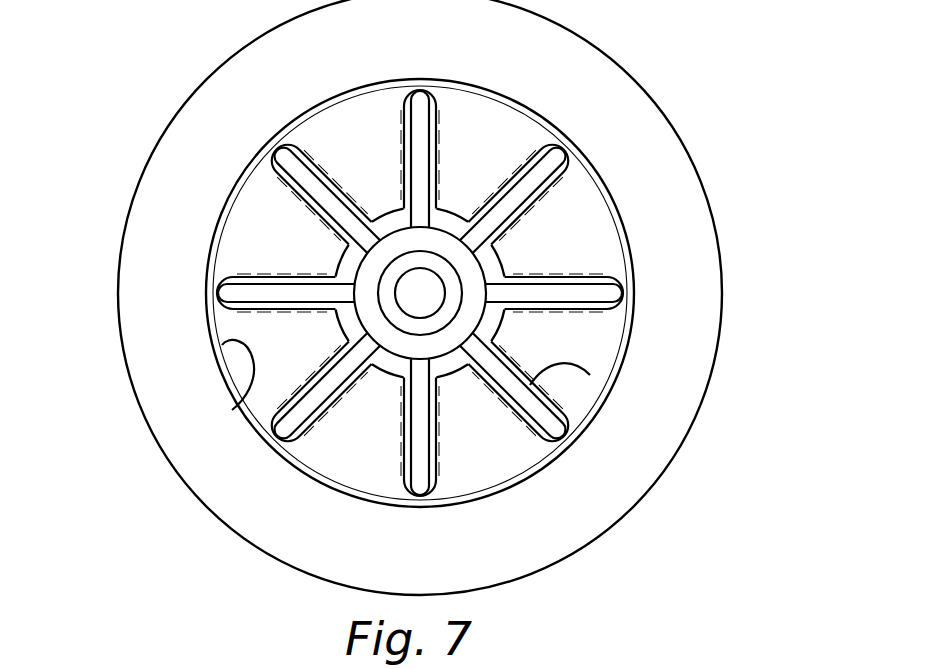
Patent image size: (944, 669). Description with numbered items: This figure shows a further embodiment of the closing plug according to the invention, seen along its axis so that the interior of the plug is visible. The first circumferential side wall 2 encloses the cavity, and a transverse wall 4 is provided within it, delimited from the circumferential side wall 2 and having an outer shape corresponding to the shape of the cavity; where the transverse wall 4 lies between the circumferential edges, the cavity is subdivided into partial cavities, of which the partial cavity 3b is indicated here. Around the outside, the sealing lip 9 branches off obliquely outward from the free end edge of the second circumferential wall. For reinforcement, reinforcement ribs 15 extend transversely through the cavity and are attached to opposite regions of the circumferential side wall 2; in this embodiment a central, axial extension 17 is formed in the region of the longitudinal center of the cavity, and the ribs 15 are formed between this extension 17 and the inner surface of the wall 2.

The circumferential side wall 2 is at (233, 375).
The partial cavity 3b is at (467, 150).
The transverse wall 4 is at (362, 140).
The sealing lip 9 is at (668, 318).
The reinforcement rib 15 is at (590, 375).
The central axial extension 17 is at (465, 272).